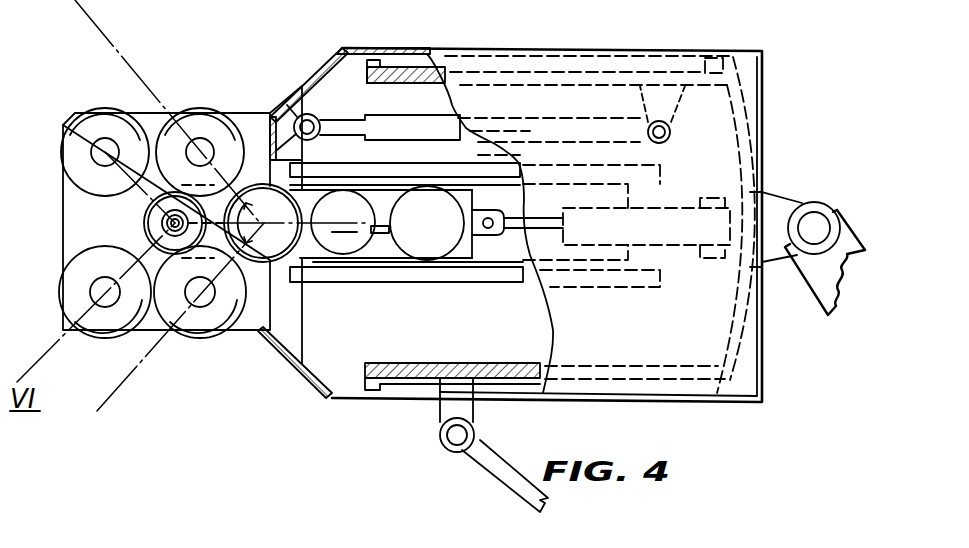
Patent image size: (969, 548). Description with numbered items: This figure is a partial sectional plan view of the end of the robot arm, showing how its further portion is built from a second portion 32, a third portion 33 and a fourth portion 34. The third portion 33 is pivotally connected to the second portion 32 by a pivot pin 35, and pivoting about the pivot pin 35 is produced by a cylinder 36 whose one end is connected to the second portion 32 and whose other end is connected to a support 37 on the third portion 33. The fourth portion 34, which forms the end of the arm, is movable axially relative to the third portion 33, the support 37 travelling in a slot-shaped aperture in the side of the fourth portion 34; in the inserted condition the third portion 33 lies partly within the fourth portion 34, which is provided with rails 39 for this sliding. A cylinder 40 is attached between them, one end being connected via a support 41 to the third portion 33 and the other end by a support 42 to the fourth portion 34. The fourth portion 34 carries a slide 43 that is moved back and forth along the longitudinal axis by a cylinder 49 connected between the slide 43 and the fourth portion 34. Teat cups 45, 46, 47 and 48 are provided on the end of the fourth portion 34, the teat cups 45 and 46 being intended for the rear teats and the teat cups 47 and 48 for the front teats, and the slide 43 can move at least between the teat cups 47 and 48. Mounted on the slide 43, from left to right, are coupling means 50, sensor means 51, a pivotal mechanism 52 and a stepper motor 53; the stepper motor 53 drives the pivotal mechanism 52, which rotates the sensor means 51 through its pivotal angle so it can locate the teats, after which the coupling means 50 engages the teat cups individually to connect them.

The second portion 32 is at (824, 292).
The third portion 33 is at (742, 118).
The fourth portion 34 is at (344, 47).
The pivot pin 35 is at (825, 220).
The cylinder 36 is at (512, 489).
The support 37 is at (442, 404).
The rails 39 is at (398, 58).
The cylinder 40 is at (376, 115).
The support 41 is at (642, 106).
The support 42 is at (290, 113).
The slide 43 is at (395, 265).
The teat cup 45 is at (62, 294).
The teat cup 46 is at (64, 163).
The teat cup 47 is at (202, 338).
The teat cup 48 is at (210, 110).
The cylinder 49 is at (665, 206).
The coupling means 50 is at (143, 224).
The sensor means 51 is at (284, 236).
The pivotal mechanism 52 is at (358, 262).
The stepper motor 53 is at (434, 262).